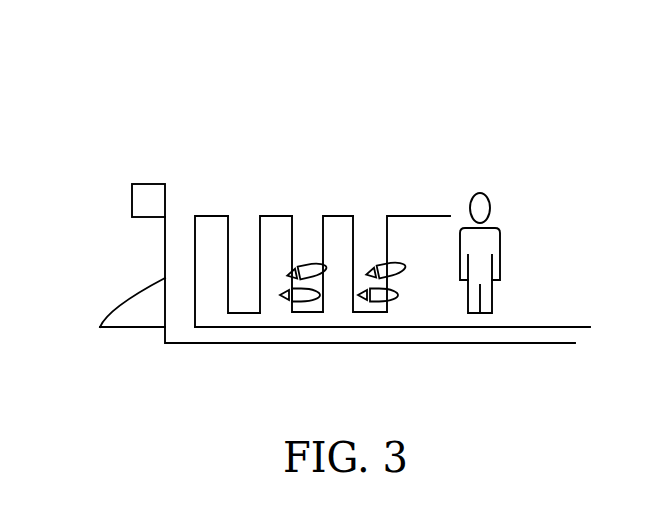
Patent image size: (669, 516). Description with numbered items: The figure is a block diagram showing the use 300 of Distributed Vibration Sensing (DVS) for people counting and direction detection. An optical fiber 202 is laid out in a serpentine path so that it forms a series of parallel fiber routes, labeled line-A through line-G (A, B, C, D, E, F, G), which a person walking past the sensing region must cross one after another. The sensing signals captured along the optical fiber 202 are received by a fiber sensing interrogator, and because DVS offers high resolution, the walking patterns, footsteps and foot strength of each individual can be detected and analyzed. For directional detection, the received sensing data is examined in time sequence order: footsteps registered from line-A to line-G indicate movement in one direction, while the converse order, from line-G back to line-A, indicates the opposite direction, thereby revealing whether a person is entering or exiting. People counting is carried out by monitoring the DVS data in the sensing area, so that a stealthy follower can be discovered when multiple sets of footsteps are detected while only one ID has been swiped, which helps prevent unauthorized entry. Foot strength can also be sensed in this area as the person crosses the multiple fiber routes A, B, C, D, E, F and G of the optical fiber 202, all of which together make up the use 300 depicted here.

The use of DVS for people counting and direction detection 300 is at (533, 73).
The optical fiber 202 is at (144, 220).
The line- A is at (208, 259).
The line- B is at (237, 252).
The line- C is at (271, 252).
The line- D is at (299, 251).
The line- E is at (334, 251).
The line- F is at (364, 251).
The line- G is at (413, 251).